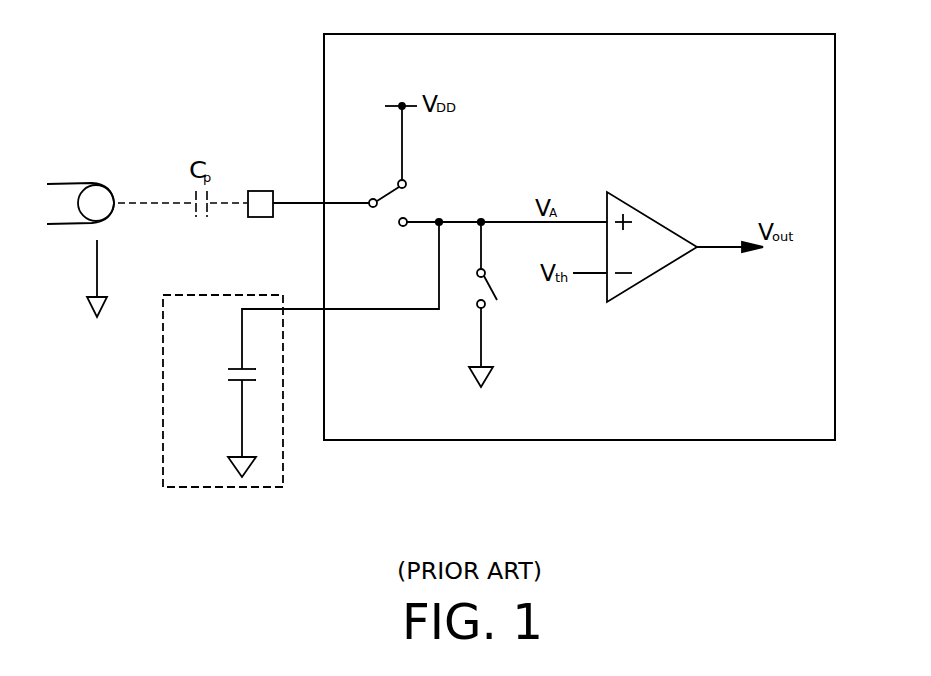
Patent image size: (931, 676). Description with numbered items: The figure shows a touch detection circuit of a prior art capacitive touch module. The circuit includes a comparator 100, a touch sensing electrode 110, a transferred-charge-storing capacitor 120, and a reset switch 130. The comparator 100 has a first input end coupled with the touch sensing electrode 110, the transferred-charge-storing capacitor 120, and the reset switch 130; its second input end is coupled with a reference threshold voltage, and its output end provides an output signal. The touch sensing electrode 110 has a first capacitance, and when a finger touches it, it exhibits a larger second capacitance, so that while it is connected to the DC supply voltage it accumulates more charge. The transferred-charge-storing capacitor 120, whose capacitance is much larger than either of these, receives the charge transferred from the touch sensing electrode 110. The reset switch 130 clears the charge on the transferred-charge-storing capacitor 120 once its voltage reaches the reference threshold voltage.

The comparator 100 is at (650, 215).
The touch sensing electrode 110 is at (262, 191).
The transferred-charge-storing capacitor 120 is at (235, 363).
The reset switch 130 is at (492, 283).